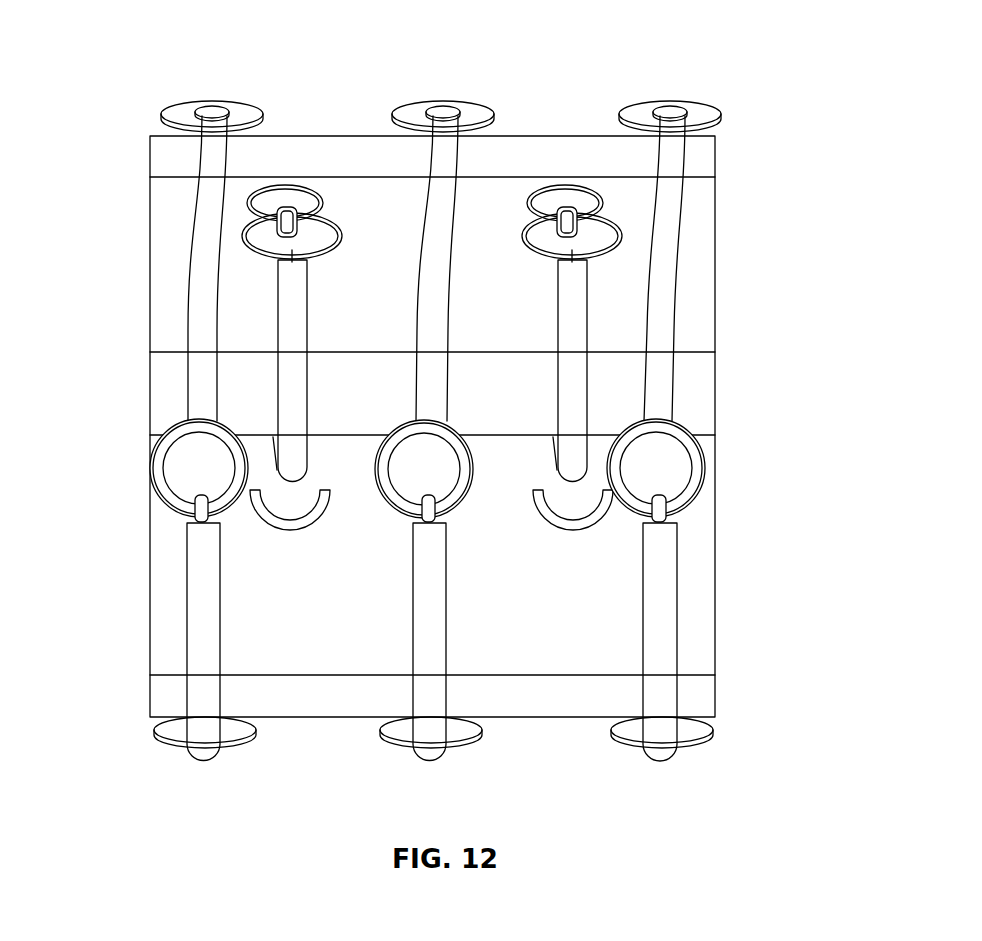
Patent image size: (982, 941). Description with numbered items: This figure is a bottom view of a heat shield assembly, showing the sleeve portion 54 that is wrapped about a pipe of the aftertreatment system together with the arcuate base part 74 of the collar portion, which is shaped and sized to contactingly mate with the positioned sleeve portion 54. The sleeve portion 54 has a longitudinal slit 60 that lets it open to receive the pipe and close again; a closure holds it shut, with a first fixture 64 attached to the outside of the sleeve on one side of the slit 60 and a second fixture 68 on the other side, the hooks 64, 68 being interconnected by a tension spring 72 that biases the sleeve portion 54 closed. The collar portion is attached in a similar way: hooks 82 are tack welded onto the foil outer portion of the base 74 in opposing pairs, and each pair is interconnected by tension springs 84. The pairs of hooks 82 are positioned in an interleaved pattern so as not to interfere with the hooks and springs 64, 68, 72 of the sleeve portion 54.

The sleeve portion 54 is at (715, 655).
The slit 60 is at (716, 432).
The first fixture 64 is at (327, 207).
The second fixture 68 is at (287, 527).
The tension spring 72 is at (308, 335).
The arcuate base part 74 is at (707, 153).
The hooks 82 is at (212, 101).
The tension springs 84 is at (197, 330).